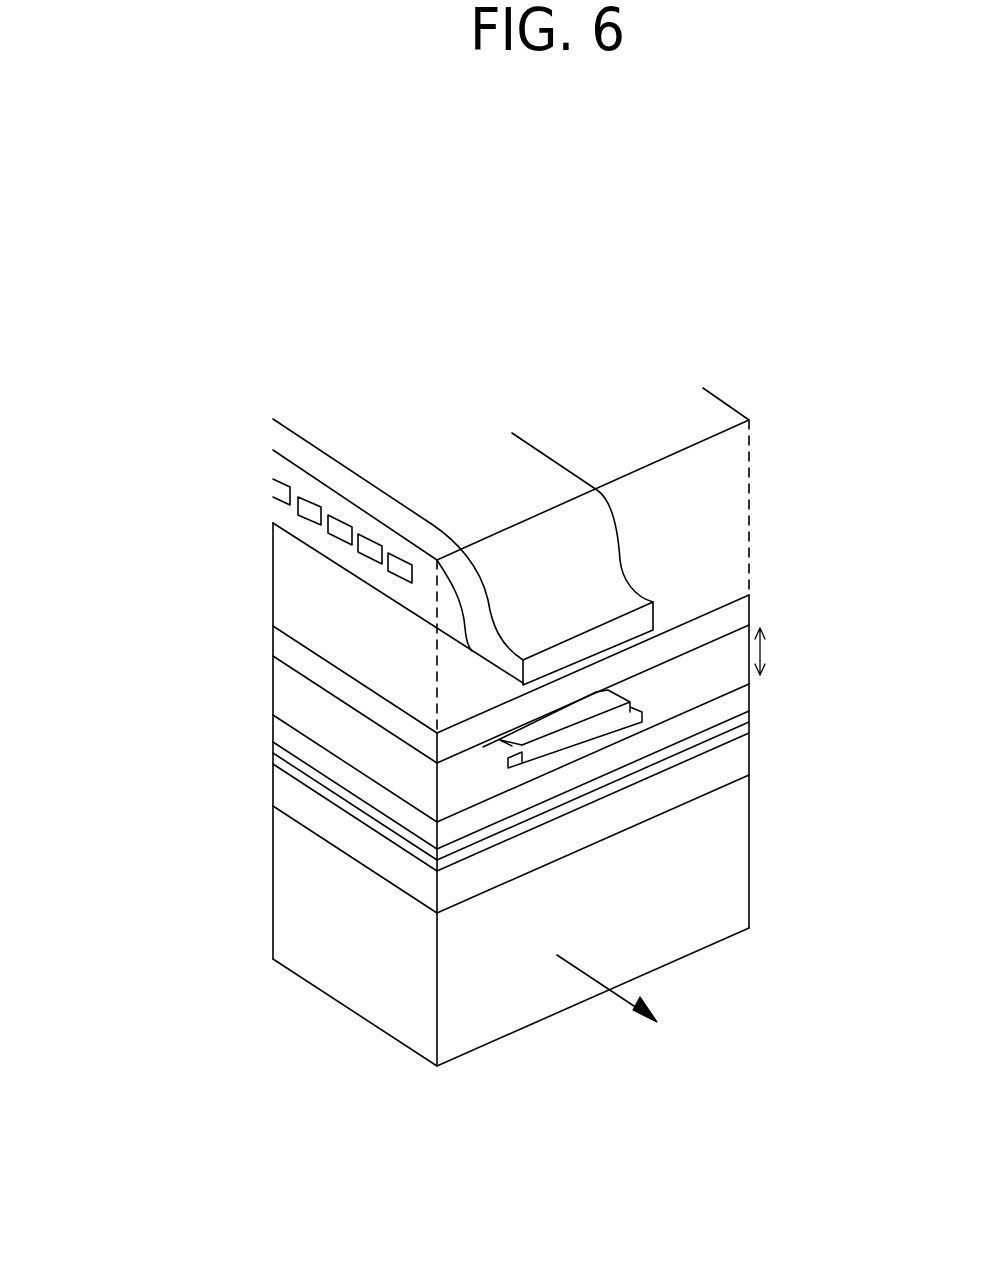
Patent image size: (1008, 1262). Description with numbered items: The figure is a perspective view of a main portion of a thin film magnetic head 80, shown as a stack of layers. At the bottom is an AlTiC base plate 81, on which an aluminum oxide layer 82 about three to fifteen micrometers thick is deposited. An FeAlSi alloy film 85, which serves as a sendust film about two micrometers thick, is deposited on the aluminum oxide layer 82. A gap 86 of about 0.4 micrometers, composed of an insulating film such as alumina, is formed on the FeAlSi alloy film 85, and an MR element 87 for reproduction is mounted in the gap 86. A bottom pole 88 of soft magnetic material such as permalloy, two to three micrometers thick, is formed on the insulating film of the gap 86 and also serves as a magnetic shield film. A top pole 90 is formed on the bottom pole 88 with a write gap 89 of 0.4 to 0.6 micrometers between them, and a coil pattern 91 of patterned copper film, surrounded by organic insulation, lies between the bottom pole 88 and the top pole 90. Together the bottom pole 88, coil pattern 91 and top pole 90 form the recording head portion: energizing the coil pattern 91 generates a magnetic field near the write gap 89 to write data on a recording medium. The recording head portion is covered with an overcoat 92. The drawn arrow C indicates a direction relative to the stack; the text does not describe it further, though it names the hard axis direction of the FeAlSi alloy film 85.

The thin film magnetic head 80 is at (168, 690).
The AlTiC base plate 81 is at (740, 853).
The aluminum oxide layer 82 is at (740, 763).
The FeAlSi alloy film 85 is at (740, 702).
The gap 86 is at (762, 650).
The MR element 87 is at (738, 683).
The bottom pole 88 is at (738, 617).
The write gap 89 is at (665, 640).
The top pole 90 is at (630, 640).
The coil pattern 91 is at (307, 510).
The overcoat 92 is at (732, 460).
The direction C is at (622, 1002).